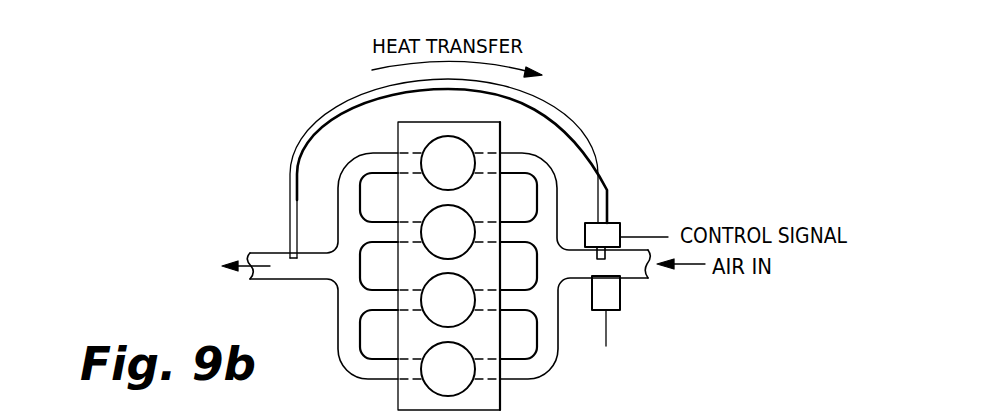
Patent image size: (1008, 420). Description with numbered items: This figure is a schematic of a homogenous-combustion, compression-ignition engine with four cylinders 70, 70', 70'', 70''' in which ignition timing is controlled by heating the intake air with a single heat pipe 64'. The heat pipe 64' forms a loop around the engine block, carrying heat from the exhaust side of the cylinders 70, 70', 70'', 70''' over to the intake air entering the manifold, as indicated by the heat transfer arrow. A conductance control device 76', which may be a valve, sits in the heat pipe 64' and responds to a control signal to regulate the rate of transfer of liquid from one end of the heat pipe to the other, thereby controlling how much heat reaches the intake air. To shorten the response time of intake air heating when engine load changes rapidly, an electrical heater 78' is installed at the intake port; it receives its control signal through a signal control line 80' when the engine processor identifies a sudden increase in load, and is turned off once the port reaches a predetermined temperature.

The heat pipe 64' is at (491, 168).
The cylinder 70 is at (448, 163).
The cylinder 70' is at (448, 232).
The cylinder 70'' is at (448, 300).
The cylinder 70''' is at (448, 369).
The conductance control device 76' is at (644, 219).
The electrical heater 78' is at (644, 293).
The signal control line 80' is at (635, 353).